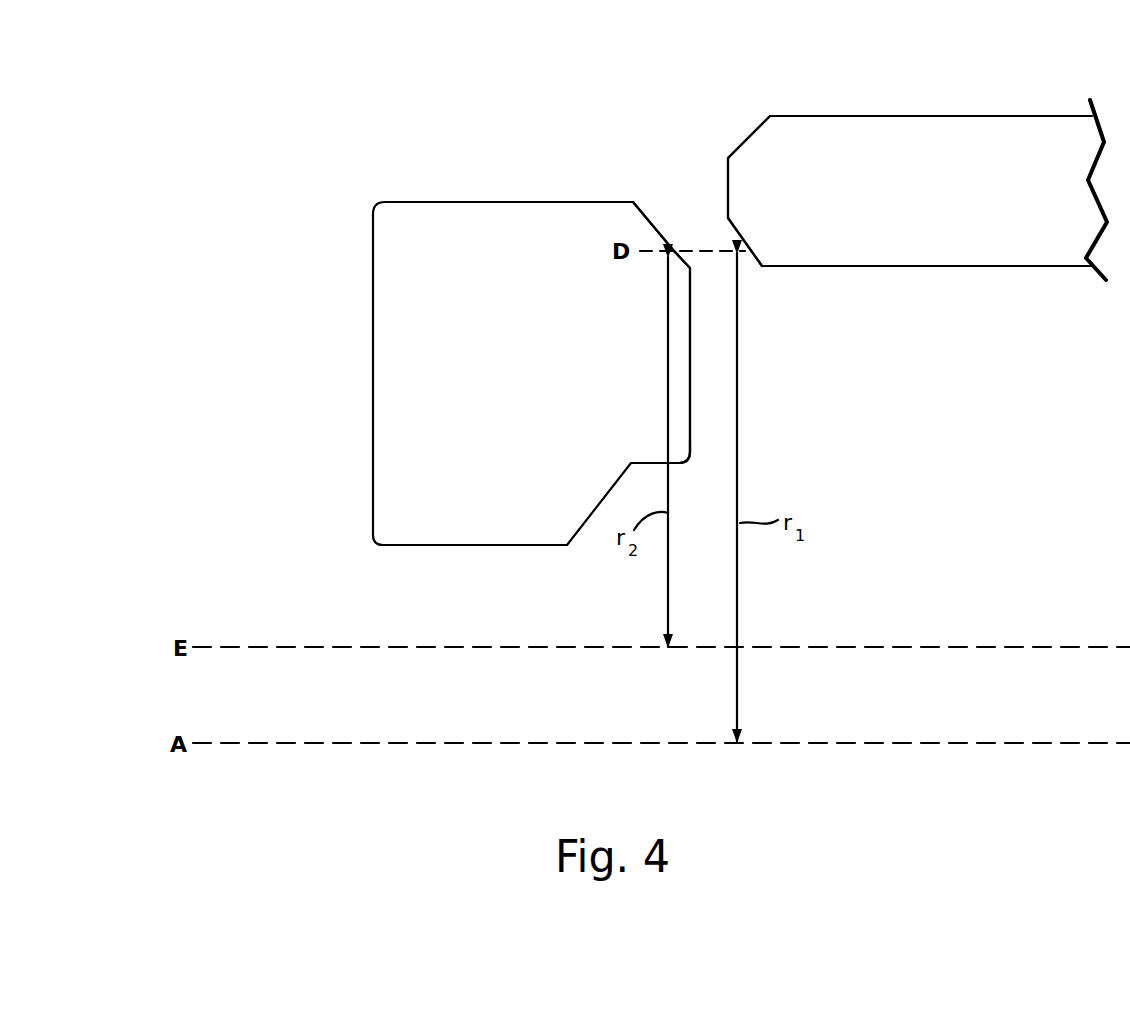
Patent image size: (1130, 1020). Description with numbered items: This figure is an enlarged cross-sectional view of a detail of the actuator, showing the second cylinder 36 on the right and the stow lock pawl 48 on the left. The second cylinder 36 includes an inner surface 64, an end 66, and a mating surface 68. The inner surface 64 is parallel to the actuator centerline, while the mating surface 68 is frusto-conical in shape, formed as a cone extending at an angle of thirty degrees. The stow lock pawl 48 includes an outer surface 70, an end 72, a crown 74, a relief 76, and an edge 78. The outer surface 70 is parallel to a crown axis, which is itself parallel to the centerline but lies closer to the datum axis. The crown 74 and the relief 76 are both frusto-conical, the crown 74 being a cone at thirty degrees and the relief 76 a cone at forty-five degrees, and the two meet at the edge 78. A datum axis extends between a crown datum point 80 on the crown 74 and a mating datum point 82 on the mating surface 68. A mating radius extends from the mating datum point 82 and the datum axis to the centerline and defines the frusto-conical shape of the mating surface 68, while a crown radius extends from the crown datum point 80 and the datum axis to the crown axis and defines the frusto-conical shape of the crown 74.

The second cylinder 36 is at (953, 140).
The stow lock pawl 48 is at (391, 266).
The inner surface 64 is at (920, 267).
The end 66 is at (727, 187).
The mating surface 68 is at (733, 220).
The outer surface 70 is at (465, 202).
The end 72 is at (692, 416).
The crown 74 is at (692, 262).
The relief 76 is at (653, 212).
The edge 78 is at (675, 250).
The crown datum point 80 is at (672, 254).
The mating datum point 82 is at (750, 250).